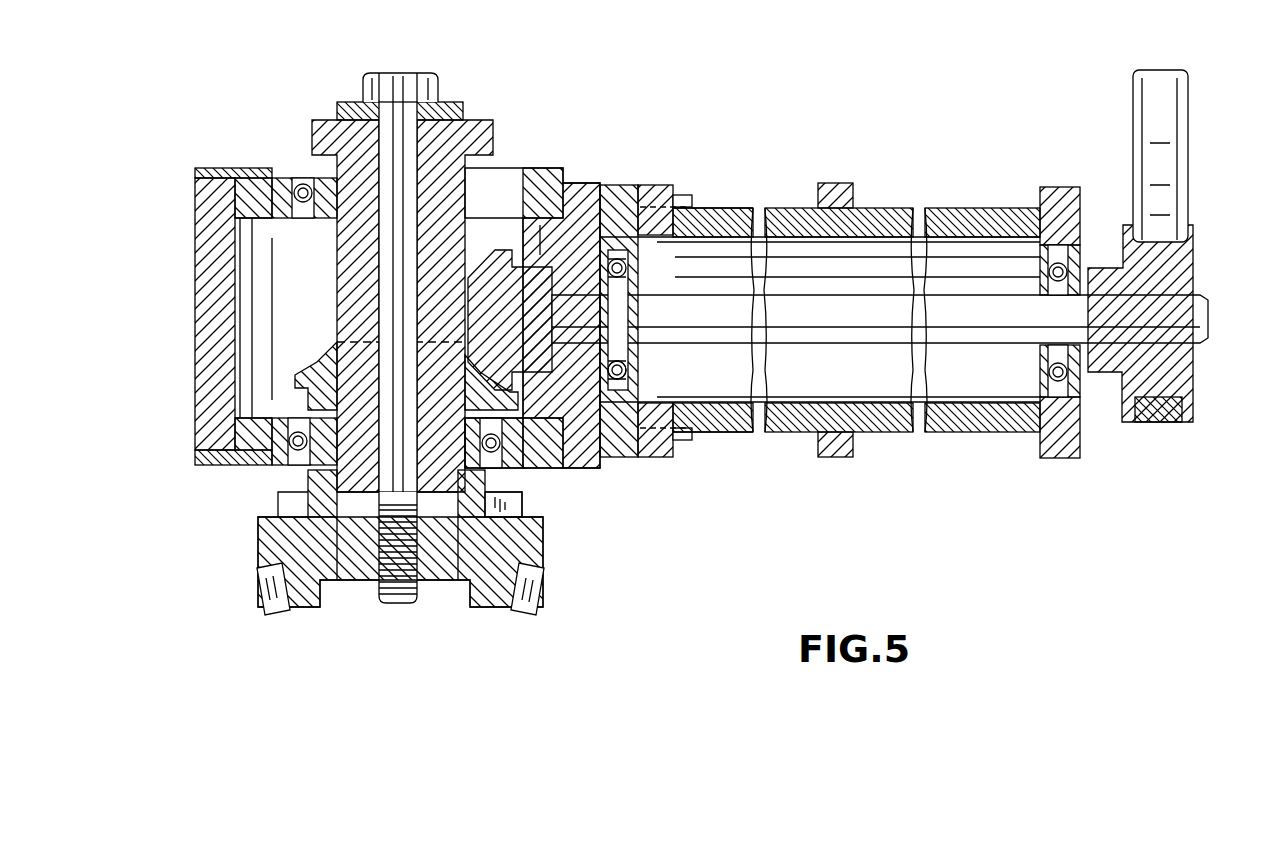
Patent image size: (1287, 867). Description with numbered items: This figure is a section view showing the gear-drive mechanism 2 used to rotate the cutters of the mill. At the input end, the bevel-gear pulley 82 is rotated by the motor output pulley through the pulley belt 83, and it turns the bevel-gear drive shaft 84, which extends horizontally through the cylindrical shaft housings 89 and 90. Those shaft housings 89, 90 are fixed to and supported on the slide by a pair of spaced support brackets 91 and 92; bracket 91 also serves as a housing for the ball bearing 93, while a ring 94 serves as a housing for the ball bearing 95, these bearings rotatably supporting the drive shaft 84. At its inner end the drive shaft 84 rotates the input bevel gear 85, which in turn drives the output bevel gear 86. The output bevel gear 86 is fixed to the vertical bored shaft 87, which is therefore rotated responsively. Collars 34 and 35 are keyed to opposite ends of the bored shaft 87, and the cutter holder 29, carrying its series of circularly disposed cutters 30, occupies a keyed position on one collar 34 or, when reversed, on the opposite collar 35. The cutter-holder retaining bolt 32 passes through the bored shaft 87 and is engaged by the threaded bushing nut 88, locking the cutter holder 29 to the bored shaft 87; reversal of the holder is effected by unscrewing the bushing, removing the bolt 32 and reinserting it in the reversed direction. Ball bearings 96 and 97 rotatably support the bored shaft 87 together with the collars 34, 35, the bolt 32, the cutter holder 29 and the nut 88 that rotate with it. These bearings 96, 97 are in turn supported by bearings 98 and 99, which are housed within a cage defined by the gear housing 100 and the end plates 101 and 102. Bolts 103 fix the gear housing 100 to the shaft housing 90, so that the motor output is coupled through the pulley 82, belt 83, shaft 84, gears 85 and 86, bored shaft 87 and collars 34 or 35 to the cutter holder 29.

The drive assembly 2 is at (760, 98).
The cutter holder 29 is at (272, 546).
The cutters 30 is at (262, 592).
The cutter-holder retaining bolt 32 is at (398, 118).
The collar 34 is at (478, 128).
The collar 35 is at (490, 482).
The bevel-gear pulley 82 is at (1186, 278).
The pulley belt 83 is at (1166, 132).
The bevel-gear drive shaft 84 is at (806, 303).
The input bevel gear 85 is at (606, 456).
The output bevel gear 86 is at (320, 366).
The bored shaft 87 is at (352, 168).
The threaded bushing nut 88 is at (356, 606).
The cylindrical shaft housing 89 is at (937, 212).
The cylindrical shaft housing 90 is at (738, 212).
The support bracket 91 is at (1057, 192).
The support bracket 92 is at (838, 186).
The ball bearing 93 is at (1070, 266).
The ring 94 is at (620, 190).
The ball bearing 95 is at (622, 262).
The ball bearing 96 is at (297, 188).
The ball bearing 97 is at (268, 468).
The bearing 98 is at (243, 195).
The bearing 99 is at (243, 444).
The gear housing 100 is at (205, 345).
The end plate 101 is at (222, 174).
The end plate 102 is at (208, 460).
The bolts 103 is at (686, 200).